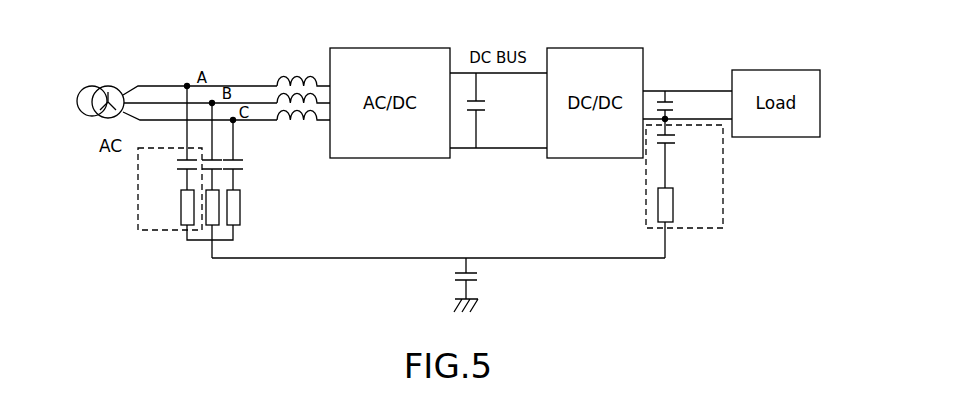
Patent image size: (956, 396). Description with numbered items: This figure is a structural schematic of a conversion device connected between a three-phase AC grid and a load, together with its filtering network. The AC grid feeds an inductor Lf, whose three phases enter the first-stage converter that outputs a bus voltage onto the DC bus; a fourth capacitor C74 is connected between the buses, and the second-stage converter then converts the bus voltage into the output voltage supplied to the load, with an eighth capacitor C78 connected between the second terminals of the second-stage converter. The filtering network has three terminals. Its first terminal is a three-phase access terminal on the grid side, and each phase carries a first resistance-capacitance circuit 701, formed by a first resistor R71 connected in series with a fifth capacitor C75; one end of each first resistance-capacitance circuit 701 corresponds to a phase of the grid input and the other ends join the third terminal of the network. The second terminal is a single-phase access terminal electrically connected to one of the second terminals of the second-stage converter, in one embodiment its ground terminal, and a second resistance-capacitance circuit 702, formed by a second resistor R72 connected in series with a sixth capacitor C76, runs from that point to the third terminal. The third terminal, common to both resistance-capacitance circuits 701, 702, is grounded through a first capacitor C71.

The first resistance-capacitance circuit 701 is at (163, 212).
The second resistance-capacitance circuit 702 is at (710, 193).
The fifth capacitor C75 is at (192, 167).
The first resistor R71 is at (193, 207).
The fourth capacitor C74 is at (495, 110).
The eighth capacitor C78 is at (685, 105).
The sixth capacitor C76 is at (685, 153).
The second resistor R72 is at (686, 205).
The first capacitor C71 is at (445, 285).
The inductor Lf is at (303, 82).